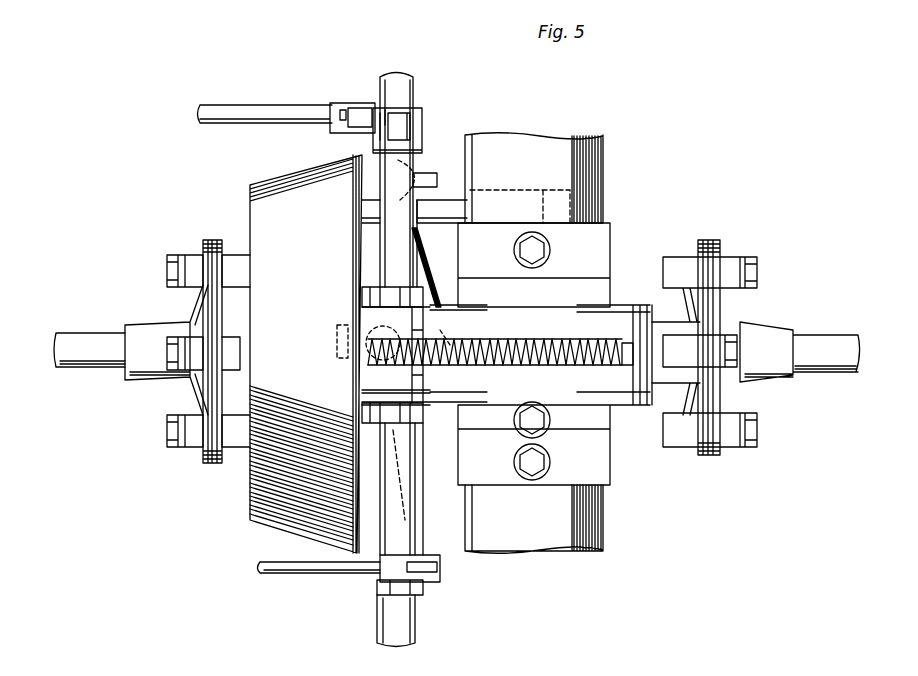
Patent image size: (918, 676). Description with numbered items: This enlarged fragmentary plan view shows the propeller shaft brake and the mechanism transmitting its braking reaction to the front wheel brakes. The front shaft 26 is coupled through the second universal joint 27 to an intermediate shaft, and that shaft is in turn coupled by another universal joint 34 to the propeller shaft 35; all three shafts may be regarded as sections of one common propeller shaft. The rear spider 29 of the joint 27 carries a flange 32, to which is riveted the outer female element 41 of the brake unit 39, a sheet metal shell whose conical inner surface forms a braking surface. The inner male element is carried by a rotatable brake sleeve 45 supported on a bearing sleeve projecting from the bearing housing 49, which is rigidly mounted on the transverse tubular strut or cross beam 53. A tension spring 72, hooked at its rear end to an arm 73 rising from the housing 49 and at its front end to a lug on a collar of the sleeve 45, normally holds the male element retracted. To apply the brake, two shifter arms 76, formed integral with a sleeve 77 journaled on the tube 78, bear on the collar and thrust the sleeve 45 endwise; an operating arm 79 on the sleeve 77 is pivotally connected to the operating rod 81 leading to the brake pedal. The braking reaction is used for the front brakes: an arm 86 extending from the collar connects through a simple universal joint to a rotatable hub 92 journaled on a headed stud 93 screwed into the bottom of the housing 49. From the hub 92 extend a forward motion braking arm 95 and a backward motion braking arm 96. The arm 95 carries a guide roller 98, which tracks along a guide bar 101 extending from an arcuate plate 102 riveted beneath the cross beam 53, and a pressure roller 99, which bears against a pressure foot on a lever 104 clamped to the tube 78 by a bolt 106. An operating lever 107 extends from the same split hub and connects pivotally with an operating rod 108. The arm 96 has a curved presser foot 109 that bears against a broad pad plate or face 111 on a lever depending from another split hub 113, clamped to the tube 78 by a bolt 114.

The shaft 26 is at (75, 340).
The second universal joint 27 is at (206, 244).
The spider 29 is at (212, 463).
The flange 32 is at (240, 393).
The universal joint 34 is at (708, 240).
The propeller shaft 35 is at (828, 336).
The propeller shaft brake unit 39 is at (258, 162).
The outer female element 41 is at (272, 508).
The brake sleeve 45 is at (372, 318).
The bearing housing 49 is at (583, 303).
The tubular strut or cross beam 53 is at (597, 148).
The tension spring 72 is at (526, 346).
The arm 73 is at (627, 343).
The shifter arms 76 is at (366, 298).
The sleeve 77 is at (417, 476).
The sleeve or tube 78 is at (414, 80).
The operating arm 79 is at (420, 547).
The operating rod 81 is at (290, 574).
The arm 86 is at (337, 348).
The hub 92 is at (446, 340).
The headed stud 93 is at (350, 368).
The forward motion braking arm 95 is at (424, 262).
The backward motion braking arm 96 is at (460, 429).
The guide roller 98 is at (432, 199).
The pressure roller 99 is at (378, 190).
The guide bar 101 is at (443, 207).
The arcuate plate 102 is at (537, 190).
The lever 104 is at (421, 174).
The bolt 106 is at (424, 119).
The operating arm or lever 107 is at (385, 114).
The operating rod 108 is at (333, 103).
The curved presser foot 109 is at (380, 560).
The pad plate or face 111 is at (418, 507).
The split hub 113 is at (424, 588).
The bolt 114 is at (378, 594).